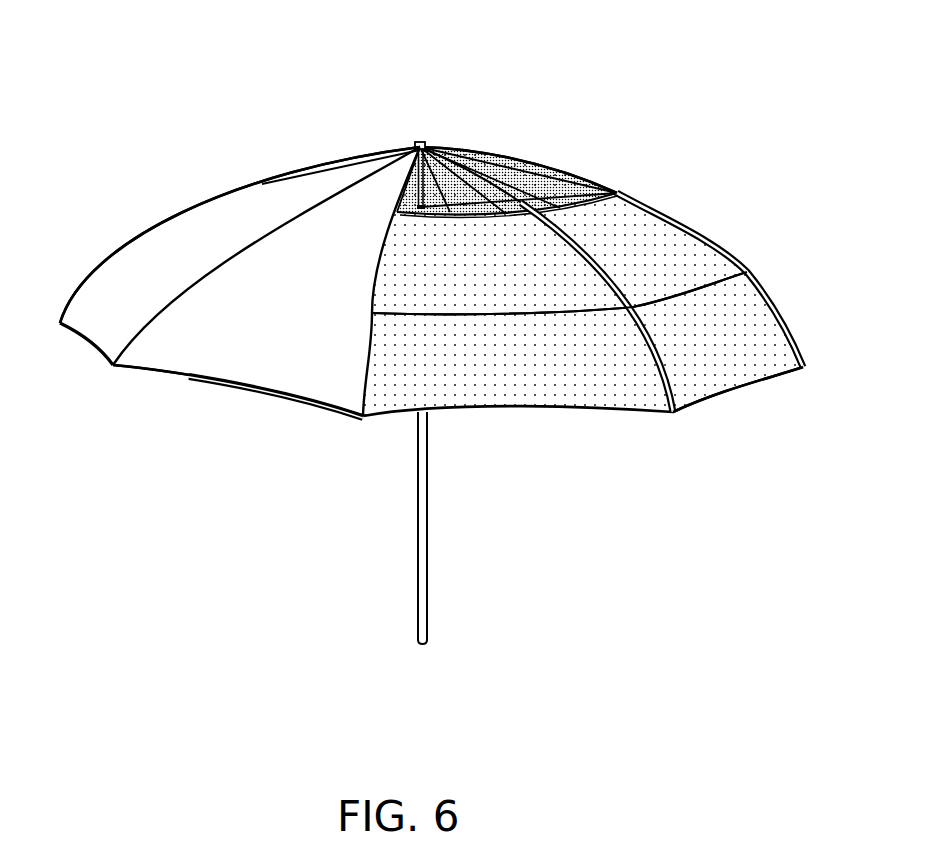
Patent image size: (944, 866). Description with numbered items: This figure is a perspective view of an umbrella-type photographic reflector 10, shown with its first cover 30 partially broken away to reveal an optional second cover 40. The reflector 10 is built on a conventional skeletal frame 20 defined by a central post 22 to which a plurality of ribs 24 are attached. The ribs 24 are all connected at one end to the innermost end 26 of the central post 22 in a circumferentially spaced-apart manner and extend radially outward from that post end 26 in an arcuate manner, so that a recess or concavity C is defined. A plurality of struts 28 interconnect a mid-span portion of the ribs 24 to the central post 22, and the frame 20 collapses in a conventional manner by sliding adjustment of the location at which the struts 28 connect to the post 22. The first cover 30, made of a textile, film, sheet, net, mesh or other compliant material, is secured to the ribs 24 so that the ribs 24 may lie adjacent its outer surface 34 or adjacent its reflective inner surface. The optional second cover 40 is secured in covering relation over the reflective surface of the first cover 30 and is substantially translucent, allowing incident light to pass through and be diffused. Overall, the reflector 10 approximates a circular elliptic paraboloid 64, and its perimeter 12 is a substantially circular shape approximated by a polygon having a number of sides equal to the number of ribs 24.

The photographic reflector 10 is at (187, 392).
The perimeter 12 is at (806, 368).
The frame 20 is at (543, 154).
The central post 22 is at (429, 518).
The ribs 24 is at (592, 250).
The innermost end 26 is at (423, 137).
The struts 28 is at (490, 162).
The first cover 30 is at (201, 234).
The outer surface 34 is at (115, 293).
The second cover 40 is at (562, 176).
The circular elliptic paraboloid 64 is at (690, 419).
The concavity C is at (317, 412).